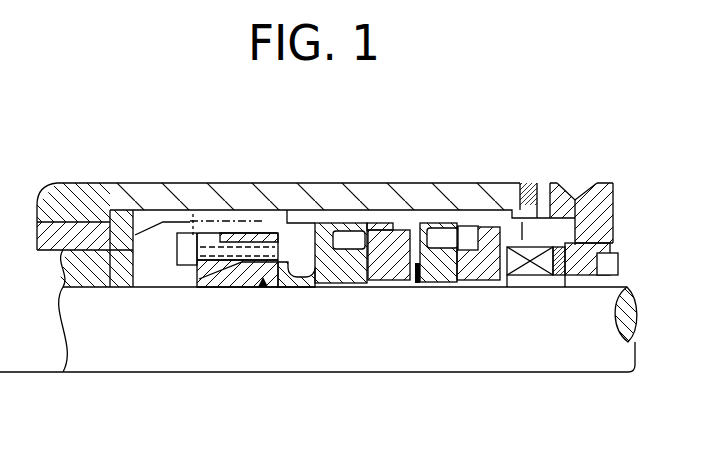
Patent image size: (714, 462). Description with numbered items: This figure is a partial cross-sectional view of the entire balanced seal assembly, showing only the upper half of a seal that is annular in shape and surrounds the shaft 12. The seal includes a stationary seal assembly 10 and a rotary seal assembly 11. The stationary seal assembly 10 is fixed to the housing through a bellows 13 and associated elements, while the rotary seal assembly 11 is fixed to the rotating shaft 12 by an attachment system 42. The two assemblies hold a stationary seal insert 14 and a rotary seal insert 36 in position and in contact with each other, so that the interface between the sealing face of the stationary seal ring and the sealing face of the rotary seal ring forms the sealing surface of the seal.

The stationary seal assembly 10 is at (344, 234).
The rotary seal assembly 11 is at (361, 200).
The shaft 12 is at (203, 357).
The bellows 13 is at (528, 273).
The stationary seal insert 14 is at (456, 273).
The rotary seal insert 36 is at (392, 276).
The attachment system 42 is at (238, 215).